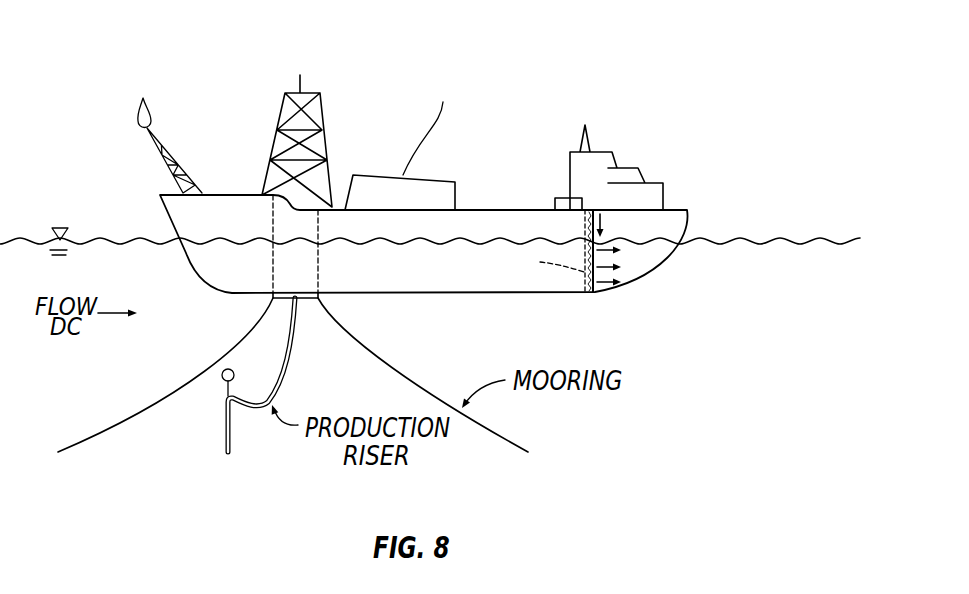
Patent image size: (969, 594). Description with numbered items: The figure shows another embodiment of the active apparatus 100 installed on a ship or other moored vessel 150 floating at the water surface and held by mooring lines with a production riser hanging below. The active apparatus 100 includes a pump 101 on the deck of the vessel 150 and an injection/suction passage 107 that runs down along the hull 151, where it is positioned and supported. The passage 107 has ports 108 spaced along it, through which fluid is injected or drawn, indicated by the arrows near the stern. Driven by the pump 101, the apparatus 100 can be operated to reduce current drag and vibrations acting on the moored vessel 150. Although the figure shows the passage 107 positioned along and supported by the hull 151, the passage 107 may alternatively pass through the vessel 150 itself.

The active apparatus 100 is at (556, 50).
The pump 101 is at (560, 198).
The injection/suction passage 107 is at (580, 291).
The ports 108 is at (605, 277).
The moored vessel 150 is at (367, 278).
The hull 151 is at (540, 265).